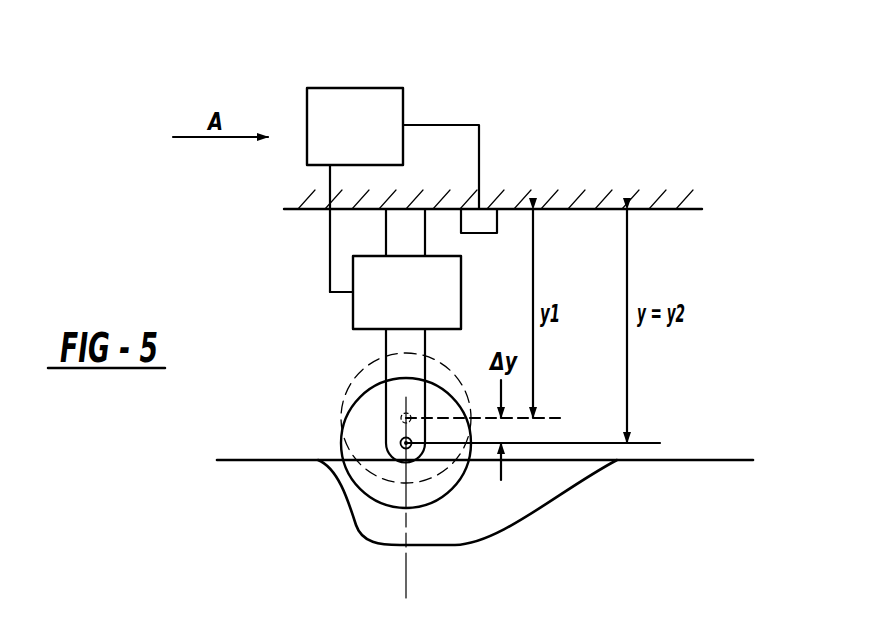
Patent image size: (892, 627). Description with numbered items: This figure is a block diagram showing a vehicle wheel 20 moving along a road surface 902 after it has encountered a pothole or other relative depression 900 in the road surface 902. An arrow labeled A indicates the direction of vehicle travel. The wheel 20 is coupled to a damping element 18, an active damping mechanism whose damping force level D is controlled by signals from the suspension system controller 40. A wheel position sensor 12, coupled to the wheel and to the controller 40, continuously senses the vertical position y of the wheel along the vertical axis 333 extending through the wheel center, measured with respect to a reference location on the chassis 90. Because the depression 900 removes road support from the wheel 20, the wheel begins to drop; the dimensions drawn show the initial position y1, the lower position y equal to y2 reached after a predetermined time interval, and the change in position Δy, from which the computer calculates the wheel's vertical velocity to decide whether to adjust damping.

The suspension system controller 40 is at (367, 88).
The chassis 90 is at (593, 167).
The wheel position sensor 12 is at (478, 233).
The damping element 18 is at (353, 310).
The vehicle wheel 20 is at (385, 488).
The pothole 900 is at (505, 495).
The road surface 902 is at (715, 460).
The vertical axis 333 is at (406, 574).